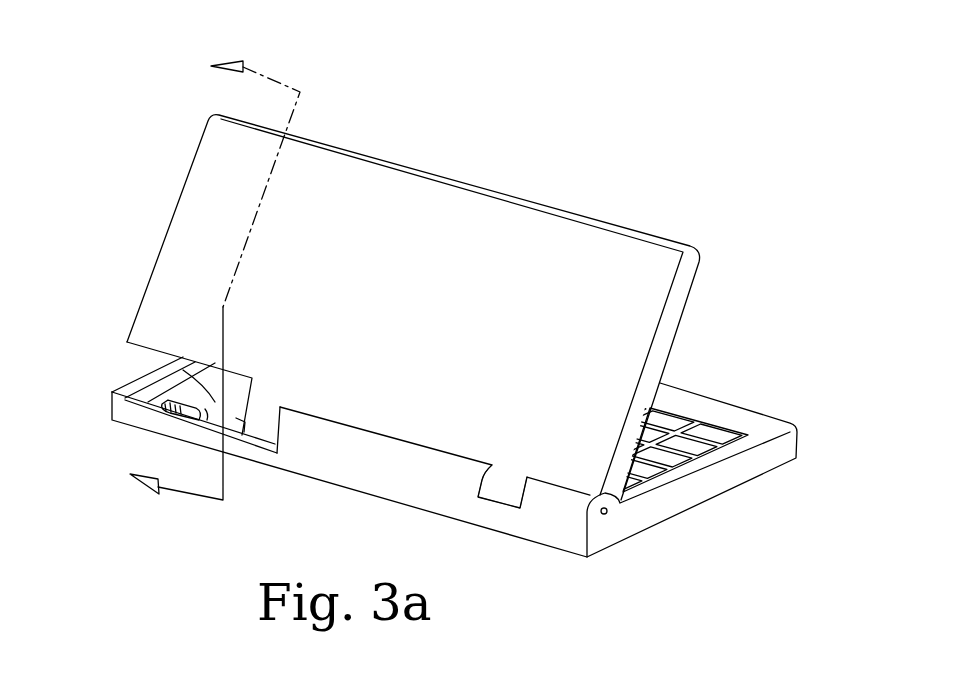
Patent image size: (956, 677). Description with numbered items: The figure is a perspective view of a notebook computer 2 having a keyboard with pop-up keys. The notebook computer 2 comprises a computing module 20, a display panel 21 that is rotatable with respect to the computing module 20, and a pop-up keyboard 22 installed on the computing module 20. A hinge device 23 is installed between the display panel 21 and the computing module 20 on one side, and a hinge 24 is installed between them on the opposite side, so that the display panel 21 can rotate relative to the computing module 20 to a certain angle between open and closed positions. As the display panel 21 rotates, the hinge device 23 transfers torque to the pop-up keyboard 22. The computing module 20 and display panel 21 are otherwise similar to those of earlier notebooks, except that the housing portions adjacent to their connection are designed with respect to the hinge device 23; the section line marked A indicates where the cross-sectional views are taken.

The notebook computer 2 is at (424, 324).
The computing module 20 is at (424, 445).
The display panel 21 is at (623, 258).
The pop-up keyboard 22 is at (673, 422).
The hinge device 23 is at (140, 370).
The hinge 24 is at (500, 487).